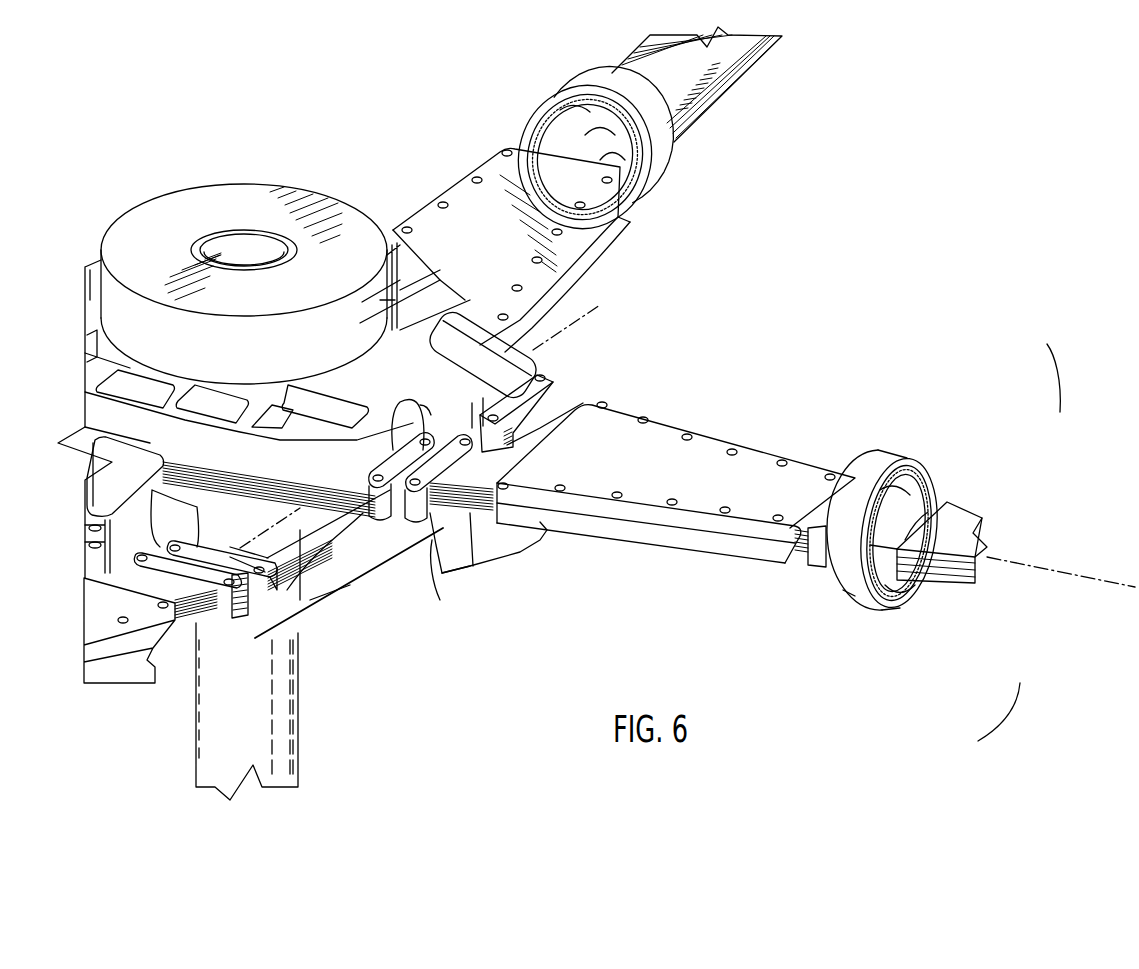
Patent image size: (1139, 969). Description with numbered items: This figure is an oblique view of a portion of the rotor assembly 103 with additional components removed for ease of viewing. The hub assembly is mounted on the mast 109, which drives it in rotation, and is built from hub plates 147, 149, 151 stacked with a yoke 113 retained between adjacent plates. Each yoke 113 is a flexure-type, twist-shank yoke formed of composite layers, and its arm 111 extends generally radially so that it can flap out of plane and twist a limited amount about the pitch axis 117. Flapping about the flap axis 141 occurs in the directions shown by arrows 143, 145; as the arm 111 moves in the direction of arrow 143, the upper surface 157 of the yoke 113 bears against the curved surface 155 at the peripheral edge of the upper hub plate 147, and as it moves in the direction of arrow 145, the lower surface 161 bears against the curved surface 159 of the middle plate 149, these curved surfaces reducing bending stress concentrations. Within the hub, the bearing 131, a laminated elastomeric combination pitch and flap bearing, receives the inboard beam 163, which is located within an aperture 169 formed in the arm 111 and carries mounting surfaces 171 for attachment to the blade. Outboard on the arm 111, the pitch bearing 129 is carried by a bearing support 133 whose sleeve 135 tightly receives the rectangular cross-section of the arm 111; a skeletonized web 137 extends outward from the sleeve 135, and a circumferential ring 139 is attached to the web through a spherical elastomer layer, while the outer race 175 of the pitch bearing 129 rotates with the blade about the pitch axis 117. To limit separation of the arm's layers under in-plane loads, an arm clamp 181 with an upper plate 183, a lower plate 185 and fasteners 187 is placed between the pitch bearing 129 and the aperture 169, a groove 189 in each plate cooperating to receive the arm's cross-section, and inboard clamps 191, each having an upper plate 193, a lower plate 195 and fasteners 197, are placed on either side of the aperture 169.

The rotor assembly 103 is at (264, 130).
The mast 109 is at (275, 768).
The arm 111 is at (968, 534).
The yoke 113 is at (188, 632).
The pitch axis 117 is at (1050, 572).
The pitch bearing 129 is at (867, 475).
The bearing 131 is at (393, 437).
The bearing support 133 is at (885, 607).
The sleeve 135 is at (923, 517).
The skeletonized web 137 is at (920, 470).
The circumferential ring 139 is at (903, 462).
The flap axis 141 is at (605, 310).
The arrow 143 is at (1048, 366).
The arrow 145 is at (1000, 712).
The upper hub plate 147 is at (413, 297).
The middle plate 149 is at (343, 540).
The hub plate 151 is at (310, 605).
The curved surface 155 is at (325, 465).
The upper surface 157 is at (367, 465).
The curved surface 159 is at (300, 530).
The lower surface 161 is at (330, 500).
The inboard beam 163 is at (528, 562).
The aperture 169 is at (507, 420).
The mounting surfaces 171 is at (478, 320).
The outer race 175 is at (845, 583).
The arm clamp 181 is at (702, 470).
The upper plate 183 is at (683, 520).
The lower plate 185 is at (709, 540).
The fasteners 187 is at (668, 500).
The groove 189 is at (810, 563).
The inboard clamp 191 is at (572, 374).
The upper plate 193 is at (380, 520).
The lower plate 195 is at (410, 520).
The fasteners 197 is at (470, 532).